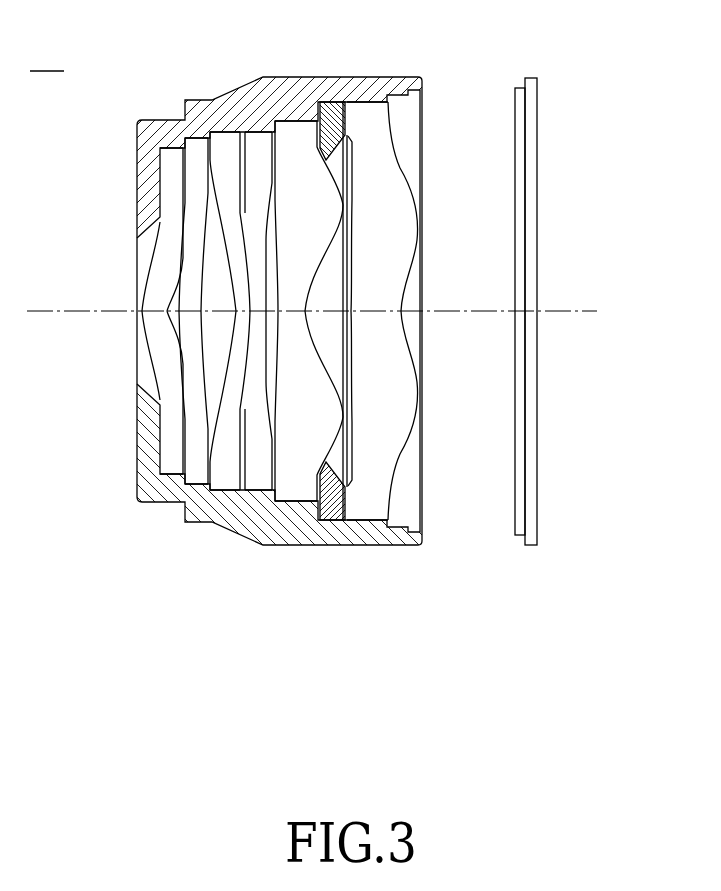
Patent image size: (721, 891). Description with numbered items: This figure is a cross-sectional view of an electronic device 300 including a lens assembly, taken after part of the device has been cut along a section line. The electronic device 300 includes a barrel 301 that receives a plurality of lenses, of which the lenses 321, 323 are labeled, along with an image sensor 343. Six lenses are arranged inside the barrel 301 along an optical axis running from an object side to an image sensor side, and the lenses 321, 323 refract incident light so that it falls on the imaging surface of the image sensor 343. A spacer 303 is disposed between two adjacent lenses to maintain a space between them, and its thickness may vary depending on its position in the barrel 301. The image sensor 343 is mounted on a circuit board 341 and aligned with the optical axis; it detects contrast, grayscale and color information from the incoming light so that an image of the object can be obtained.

The electronic device 300 is at (343, 318).
The barrel 301 is at (193, 524).
The spacer 303 is at (321, 498).
The lens 321 is at (297, 488).
The lens 323 is at (375, 497).
The circuit board 341 is at (532, 203).
The image sensor 343 is at (515, 443).